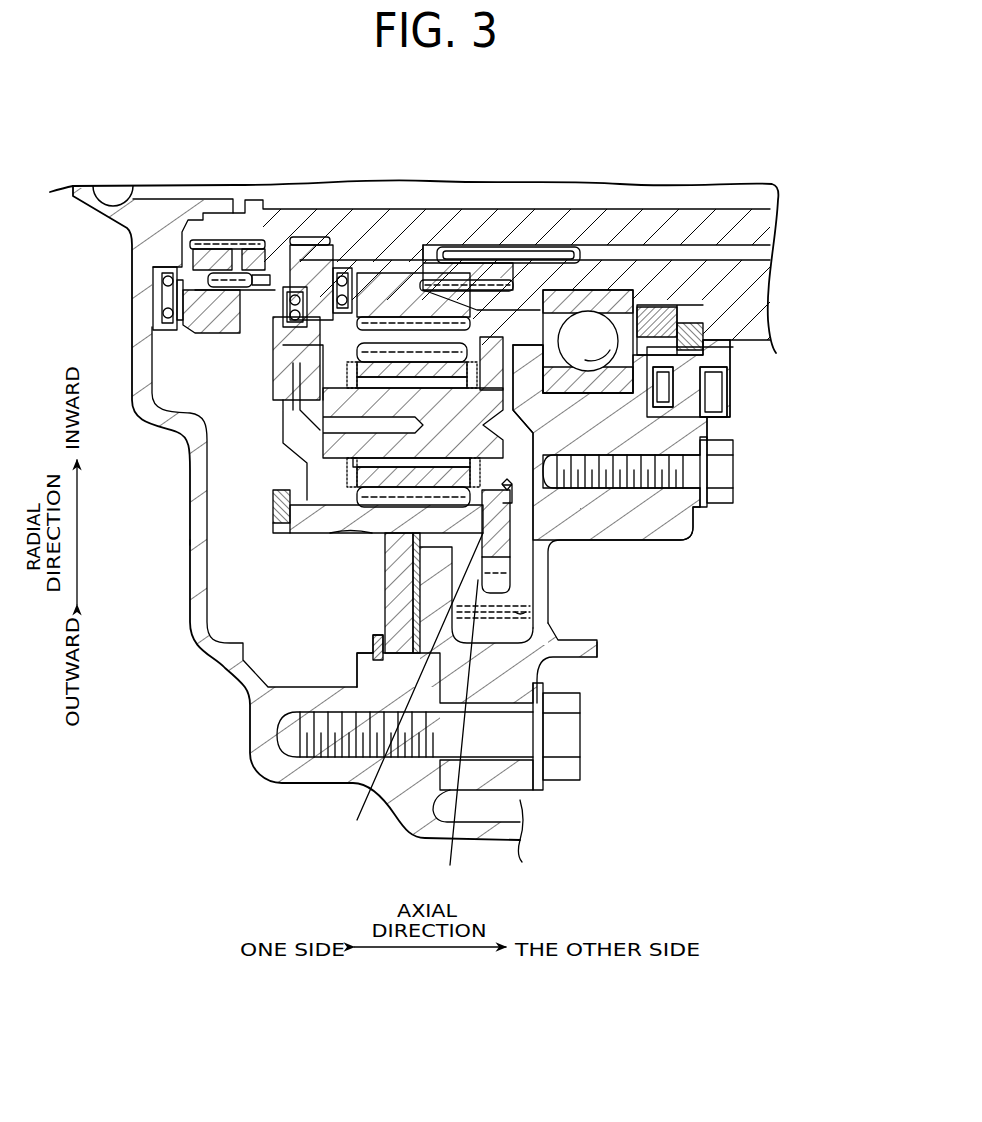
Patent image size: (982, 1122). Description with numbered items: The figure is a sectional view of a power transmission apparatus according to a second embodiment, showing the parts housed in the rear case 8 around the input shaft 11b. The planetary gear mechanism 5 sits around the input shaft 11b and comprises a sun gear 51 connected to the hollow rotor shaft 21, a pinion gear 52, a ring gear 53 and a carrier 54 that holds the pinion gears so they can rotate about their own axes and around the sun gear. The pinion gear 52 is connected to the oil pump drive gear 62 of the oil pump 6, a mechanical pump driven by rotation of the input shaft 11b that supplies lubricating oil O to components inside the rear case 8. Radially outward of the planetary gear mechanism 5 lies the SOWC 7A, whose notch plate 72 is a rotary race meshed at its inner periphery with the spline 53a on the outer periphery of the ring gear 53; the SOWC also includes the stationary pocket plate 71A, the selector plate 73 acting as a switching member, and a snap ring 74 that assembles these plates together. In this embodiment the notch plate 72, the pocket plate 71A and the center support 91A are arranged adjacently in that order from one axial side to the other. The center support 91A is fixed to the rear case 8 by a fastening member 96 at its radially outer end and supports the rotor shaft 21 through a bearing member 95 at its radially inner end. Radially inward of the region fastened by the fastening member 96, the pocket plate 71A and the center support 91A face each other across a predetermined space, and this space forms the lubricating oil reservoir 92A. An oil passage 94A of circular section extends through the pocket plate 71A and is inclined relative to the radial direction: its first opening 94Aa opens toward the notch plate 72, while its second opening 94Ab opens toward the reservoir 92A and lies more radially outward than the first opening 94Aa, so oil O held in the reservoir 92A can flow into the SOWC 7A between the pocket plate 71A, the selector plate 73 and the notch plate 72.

The planetary gear mechanism 5 is at (300, 432).
The oil pump 6 is at (522, 494).
The rear case 8 is at (190, 568).
The SOWC 7A is at (300, 605).
The input shaft 11b is at (753, 226).
The rotor shaft 21 is at (753, 300).
The sun gear 51 is at (405, 275).
The pinion gear 52 is at (345, 478).
The ring gear 53 is at (285, 536).
The spline 53a is at (362, 534).
The carrier 54 is at (337, 355).
The oil pump drive gear 62 is at (500, 530).
The pocket plate 71A is at (357, 663).
The notch plate 72 is at (403, 598).
The selector plate 73 is at (418, 553).
The snap ring 74 is at (375, 637).
The center support 91A is at (593, 675).
The lubricating oil reservoir 92A is at (524, 590).
The oil passage 94A is at (530, 695).
The first opening 94Aa is at (405, 692).
The second opening 94Ab is at (454, 738).
The bearing member 95 is at (620, 300).
The fastening member 96 is at (580, 752).
The lubricating oil O is at (523, 617).